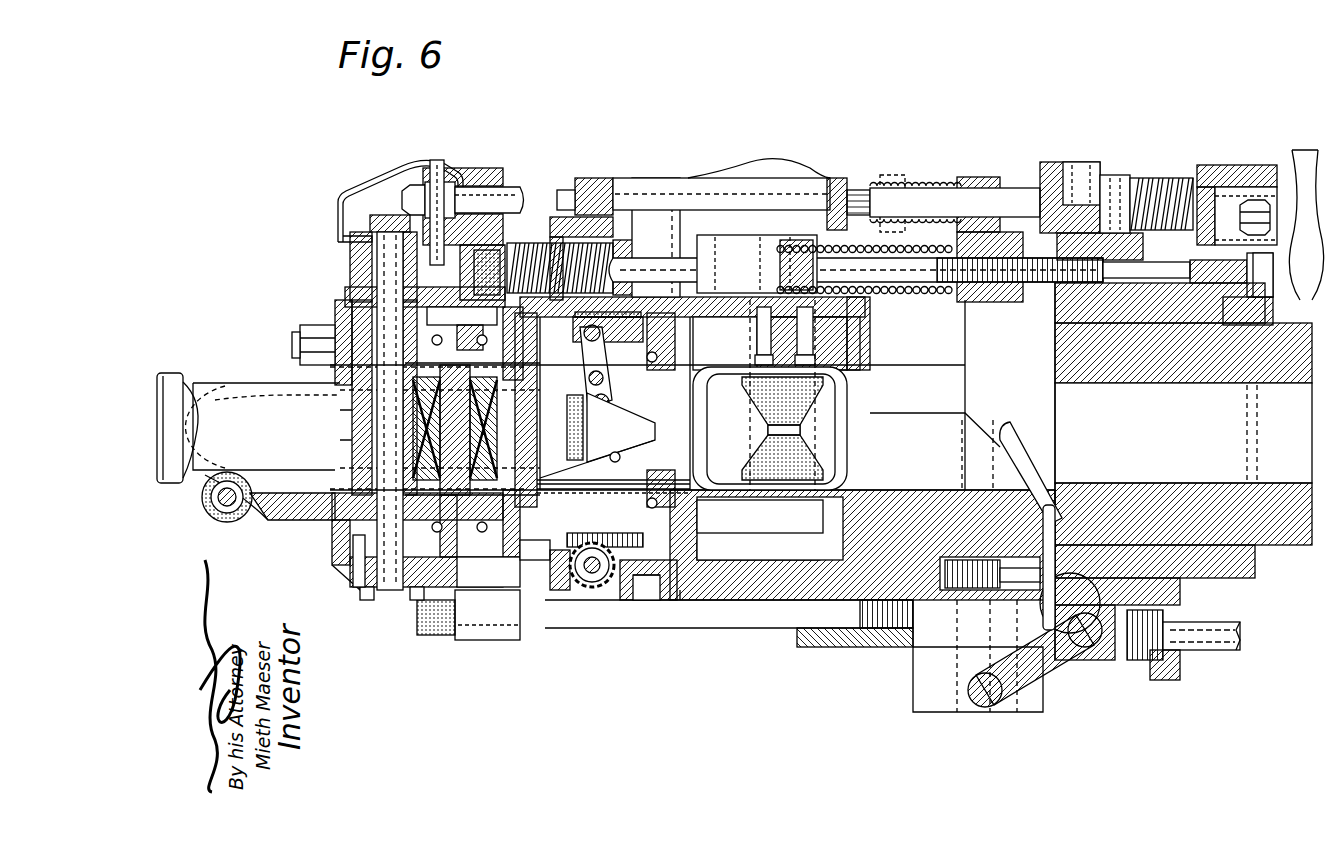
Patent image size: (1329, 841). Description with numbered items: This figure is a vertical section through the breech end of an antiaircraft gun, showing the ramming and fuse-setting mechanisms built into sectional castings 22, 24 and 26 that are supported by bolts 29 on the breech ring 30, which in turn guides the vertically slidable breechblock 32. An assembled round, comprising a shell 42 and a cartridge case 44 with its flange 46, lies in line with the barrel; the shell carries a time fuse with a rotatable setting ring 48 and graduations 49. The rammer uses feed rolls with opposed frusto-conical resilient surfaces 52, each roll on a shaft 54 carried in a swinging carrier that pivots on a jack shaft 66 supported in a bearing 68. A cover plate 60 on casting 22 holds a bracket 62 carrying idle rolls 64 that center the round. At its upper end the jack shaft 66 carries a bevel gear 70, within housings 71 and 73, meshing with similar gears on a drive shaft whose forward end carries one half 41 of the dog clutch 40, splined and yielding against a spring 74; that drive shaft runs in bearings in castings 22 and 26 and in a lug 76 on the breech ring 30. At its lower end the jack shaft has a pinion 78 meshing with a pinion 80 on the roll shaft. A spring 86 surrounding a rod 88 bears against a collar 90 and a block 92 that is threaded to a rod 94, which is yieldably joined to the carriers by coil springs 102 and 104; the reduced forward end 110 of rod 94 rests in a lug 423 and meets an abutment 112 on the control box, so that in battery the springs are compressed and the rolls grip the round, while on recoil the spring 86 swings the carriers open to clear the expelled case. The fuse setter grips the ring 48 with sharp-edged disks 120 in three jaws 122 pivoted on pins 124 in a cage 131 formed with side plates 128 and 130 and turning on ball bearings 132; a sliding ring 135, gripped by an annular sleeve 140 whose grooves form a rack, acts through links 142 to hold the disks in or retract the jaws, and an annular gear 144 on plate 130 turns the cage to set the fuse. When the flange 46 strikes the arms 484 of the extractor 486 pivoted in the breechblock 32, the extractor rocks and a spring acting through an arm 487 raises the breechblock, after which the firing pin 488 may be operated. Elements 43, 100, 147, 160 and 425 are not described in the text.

The sectional casting 22 is at (470, 600).
The sectional casting 24 is at (642, 565).
The sectional casting 26 is at (820, 602).
The bolt 29 is at (710, 628).
The breech ring 30 is at (1228, 573).
The breechblock 32 is at (930, 645).
The dog clutch 40 is at (1248, 156).
The clutch half 41 is at (1218, 172).
The shell 42 is at (420, 427).
The nut 43 is at (1263, 176).
The cartridge case 44 is at (222, 381).
The flange 46 is at (163, 373).
The setting ring 48 is at (626, 437).
The graduations 49 is at (612, 459).
The frusto-conical surfaces of resilient material 52 is at (458, 414).
The roll shaft 54 is at (458, 412).
The cover plate 60 is at (348, 562).
The bracket 62 is at (278, 494).
The idle roll 64 is at (202, 500).
The jack shaft 66 is at (385, 440).
The bearing 68 is at (408, 600).
The bevel gear 70 is at (338, 226).
The housing 71 is at (388, 172).
The housing 73 is at (776, 160).
The spring 74 is at (1166, 178).
The lug 76 is at (1082, 166).
The pinion 78 is at (359, 600).
The pinion 80 is at (520, 580).
The spring 86 is at (902, 187).
The rod 88 is at (718, 196).
The collar 90 is at (837, 180).
The block 92 is at (968, 178).
The rod 94 is at (667, 260).
The sleeve 100 is at (720, 236).
The coil spring 102 is at (897, 248).
The coil spring 104 is at (542, 240).
The reduced forward end 110 is at (1262, 270).
The abutment 112 is at (1273, 300).
The sharp-edged disk 120 is at (609, 402).
The jaw 122 is at (603, 381).
The pin 124 is at (577, 350).
The side plate 128 is at (559, 474).
The side plate 130 is at (635, 489).
The cage 131 is at (640, 478).
The ball bearing 132 is at (683, 343).
The sliding ring 135 is at (570, 548).
The annular sleeve 140 is at (620, 600).
The link 142 is at (598, 355).
The annular gear 144 is at (642, 563).
The block 147 is at (655, 180).
The gear 160 is at (596, 582).
The lug 423 is at (1192, 262).
The plate 425 is at (1298, 160).
The extractor arm 484 is at (1020, 433).
The extractor 486 is at (1045, 505).
The arm 487 is at (1062, 680).
The firing pin 488 is at (978, 568).